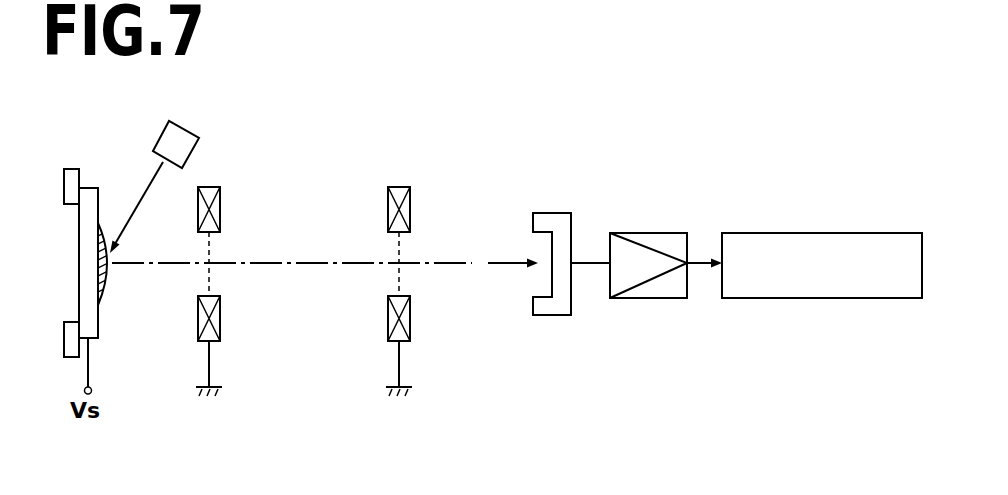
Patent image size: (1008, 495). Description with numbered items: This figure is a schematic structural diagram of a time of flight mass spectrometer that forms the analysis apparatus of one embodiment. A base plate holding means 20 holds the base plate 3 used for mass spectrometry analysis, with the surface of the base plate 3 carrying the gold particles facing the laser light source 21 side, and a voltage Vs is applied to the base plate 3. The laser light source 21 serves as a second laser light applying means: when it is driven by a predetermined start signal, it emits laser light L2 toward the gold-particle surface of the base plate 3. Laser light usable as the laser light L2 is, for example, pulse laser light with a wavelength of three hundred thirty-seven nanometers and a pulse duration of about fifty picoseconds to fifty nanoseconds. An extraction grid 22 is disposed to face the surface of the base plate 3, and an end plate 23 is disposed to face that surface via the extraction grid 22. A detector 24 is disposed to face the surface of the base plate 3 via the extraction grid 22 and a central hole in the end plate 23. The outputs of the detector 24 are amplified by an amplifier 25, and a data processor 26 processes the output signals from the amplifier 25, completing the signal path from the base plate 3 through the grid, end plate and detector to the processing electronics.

The base plate 3 is at (79, 250).
The base plate holding means 20 is at (68, 169).
The laser light source 21 is at (195, 130).
The extraction grid 22 is at (211, 187).
The end plate 23 is at (402, 187).
The detector 24 is at (545, 213).
The amplifier 25 is at (645, 233).
The data processor 26 is at (832, 233).
The laser light L2 is at (143, 192).